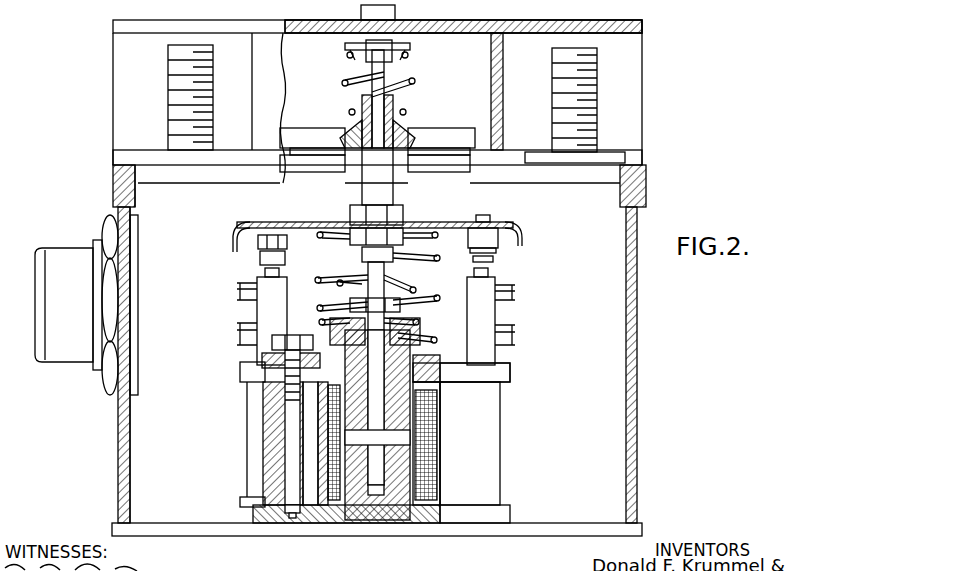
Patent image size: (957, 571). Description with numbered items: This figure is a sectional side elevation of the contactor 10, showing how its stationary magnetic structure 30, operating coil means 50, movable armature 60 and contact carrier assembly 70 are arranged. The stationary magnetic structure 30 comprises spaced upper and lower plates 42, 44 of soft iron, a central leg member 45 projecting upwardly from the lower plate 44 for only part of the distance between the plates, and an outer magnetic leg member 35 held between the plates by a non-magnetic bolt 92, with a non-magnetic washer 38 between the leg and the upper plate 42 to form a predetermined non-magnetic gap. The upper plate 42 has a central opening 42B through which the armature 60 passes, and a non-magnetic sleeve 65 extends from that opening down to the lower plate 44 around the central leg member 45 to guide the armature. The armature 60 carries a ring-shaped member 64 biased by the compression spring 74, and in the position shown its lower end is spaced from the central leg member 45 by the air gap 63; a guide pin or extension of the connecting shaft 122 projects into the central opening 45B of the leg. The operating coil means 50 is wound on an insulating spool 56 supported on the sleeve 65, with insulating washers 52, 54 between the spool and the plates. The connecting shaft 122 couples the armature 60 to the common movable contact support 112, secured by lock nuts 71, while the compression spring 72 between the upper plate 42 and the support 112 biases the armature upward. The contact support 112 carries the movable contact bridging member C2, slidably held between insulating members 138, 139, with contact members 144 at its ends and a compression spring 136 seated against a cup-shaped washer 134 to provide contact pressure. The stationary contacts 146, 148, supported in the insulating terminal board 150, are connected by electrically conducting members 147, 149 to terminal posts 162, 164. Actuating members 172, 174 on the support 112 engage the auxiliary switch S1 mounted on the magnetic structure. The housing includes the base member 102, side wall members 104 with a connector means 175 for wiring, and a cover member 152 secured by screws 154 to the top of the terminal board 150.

The contactor 10 is at (90, 413).
The stationary magnetic structure 30 is at (541, 448).
The outer magnetic leg member 35 is at (270, 463).
The non-magnetic washer 38 is at (265, 398).
The upper plate 42 is at (510, 372).
The central opening 42B is at (461, 373).
The lower plate 44 is at (500, 514).
The central leg member 45 is at (400, 448).
The central opening 45B is at (438, 462).
The operating coil means 50 is at (252, 420).
The auxiliary switch S1 is at (265, 310).
The electrically insulating washer 52 is at (242, 372).
The electrically insulating washer 54 is at (242, 500).
The insulating spool 56 is at (438, 478).
The movable armature 60 is at (474, 410).
The air gap 63 is at (440, 426).
The ring-shaped member 64 is at (330, 337).
The sleeve 65 is at (438, 495).
The contact carrier assembly 70 is at (430, 207).
The lock nut 71 is at (352, 222).
The compression spring 72 is at (436, 262).
The compression spring 74 is at (402, 300).
The non-magnetic bolt 92 is at (290, 445).
The base member 102 is at (433, 537).
The side wall member 104 is at (122, 456).
The common movable contact support 112 is at (499, 222).
The connecting shaft 122 is at (354, 291).
The cup-shaped washer 134 is at (410, 48).
The compression spring 136 is at (413, 79).
The electrical insulating member 138 is at (393, 108).
The electrical insulating member 139 is at (410, 125).
The contact member 144 is at (314, 132).
The stationary contact 146 is at (320, 173).
The electrically conducting member 147 is at (287, 160).
The stationary contact 148 is at (466, 173).
The electrically conducting member 149 is at (550, 166).
The insulating terminal board 150 is at (542, 104).
The top plate 152 is at (501, 30).
The bolt or screw 154 is at (395, 14).
The terminal post 162 is at (170, 89).
The terminal post 164 is at (597, 93).
The actuating member 172 is at (258, 252).
The actuating member 174 is at (486, 252).
The connector means 175 is at (170, 246).
The movable contact bridging member C2 is at (292, 128).